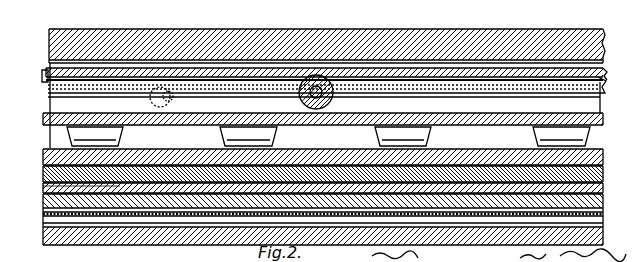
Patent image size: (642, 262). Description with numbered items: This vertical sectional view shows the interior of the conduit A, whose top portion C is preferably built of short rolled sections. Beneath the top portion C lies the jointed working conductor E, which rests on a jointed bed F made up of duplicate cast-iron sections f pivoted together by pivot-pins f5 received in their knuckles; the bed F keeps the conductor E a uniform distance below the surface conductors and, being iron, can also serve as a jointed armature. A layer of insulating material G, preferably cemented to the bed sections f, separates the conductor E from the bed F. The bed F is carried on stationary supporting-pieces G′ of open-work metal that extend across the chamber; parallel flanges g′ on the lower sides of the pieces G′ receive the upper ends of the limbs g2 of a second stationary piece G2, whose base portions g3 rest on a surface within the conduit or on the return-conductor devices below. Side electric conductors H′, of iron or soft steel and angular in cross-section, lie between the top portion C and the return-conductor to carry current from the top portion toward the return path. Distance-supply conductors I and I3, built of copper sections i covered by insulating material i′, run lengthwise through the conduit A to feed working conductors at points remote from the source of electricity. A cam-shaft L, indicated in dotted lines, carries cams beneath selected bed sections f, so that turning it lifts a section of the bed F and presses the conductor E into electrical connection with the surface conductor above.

The conduit A is at (327, 37).
The top portion C is at (394, 40).
The jointed working conductor E is at (42, 76).
The insulating material G is at (26, 105).
The jointed bed F is at (594, 91).
The cam-shaft L is at (124, 106).
The bed section f is at (360, 83).
The distance-supply conductor section i is at (158, 88).
The insulating material i′ is at (170, 88).
The pivot-pin f5 is at (332, 94).
The stationary supporting-piece G′ is at (323, 127).
The parallel flange g′ is at (118, 132).
The limb g2 is at (277, 143).
The distance-supply conductor I is at (603, 155).
The distance-supply conductor I3 is at (603, 174).
The second stationary piece G2 is at (603, 188).
The base portion g3 is at (70, 186).
The side electric conductor H′ is at (60, 200).